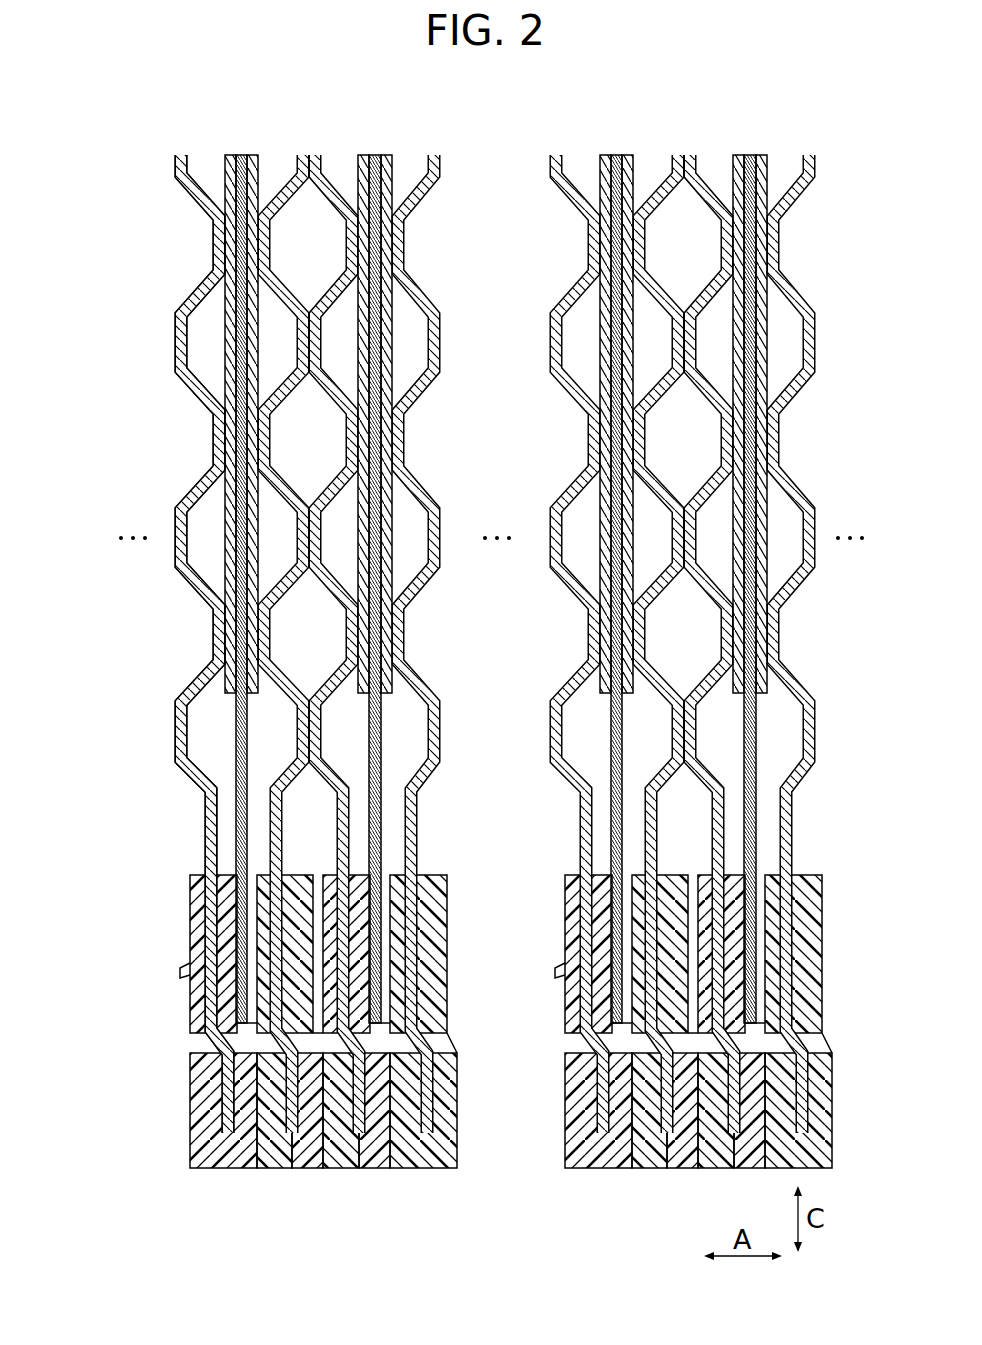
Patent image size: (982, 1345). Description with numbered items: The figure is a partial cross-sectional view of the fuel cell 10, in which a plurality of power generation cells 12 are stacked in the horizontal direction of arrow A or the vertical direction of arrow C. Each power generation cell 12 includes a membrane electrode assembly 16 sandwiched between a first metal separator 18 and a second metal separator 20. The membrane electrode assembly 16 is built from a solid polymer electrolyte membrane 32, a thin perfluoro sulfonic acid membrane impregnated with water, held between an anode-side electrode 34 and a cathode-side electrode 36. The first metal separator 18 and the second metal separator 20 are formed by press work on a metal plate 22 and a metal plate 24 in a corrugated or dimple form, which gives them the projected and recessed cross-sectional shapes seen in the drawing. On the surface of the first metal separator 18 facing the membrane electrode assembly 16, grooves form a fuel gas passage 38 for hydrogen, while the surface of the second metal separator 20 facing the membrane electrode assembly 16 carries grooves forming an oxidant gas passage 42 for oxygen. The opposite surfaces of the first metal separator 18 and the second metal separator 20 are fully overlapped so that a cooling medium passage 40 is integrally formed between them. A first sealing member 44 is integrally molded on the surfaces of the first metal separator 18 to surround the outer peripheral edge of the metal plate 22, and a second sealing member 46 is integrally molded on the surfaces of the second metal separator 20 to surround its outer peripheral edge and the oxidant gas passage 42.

The fuel cell 10 is at (463, 643).
The power generation cell 12 is at (266, 594).
The membrane electrode assembly 16 is at (179, 558).
The first metal separator 18 is at (199, 178).
The second metal separator 20 is at (179, 558).
The metal plate 22 is at (190, 578).
The metal plate 24 is at (278, 592).
The solid polymer electrolyte membrane 32 is at (242, 351).
The anode-side electrode 34 is at (233, 317).
The cathode-side electrode 36 is at (252, 384).
The fuel gas passage 38 is at (345, 378).
The cooling medium passage 40 is at (318, 481).
The oxidant gas passage 42 is at (417, 312).
The first sealing member 44 is at (216, 1178).
The second sealing member 46 is at (288, 1178).